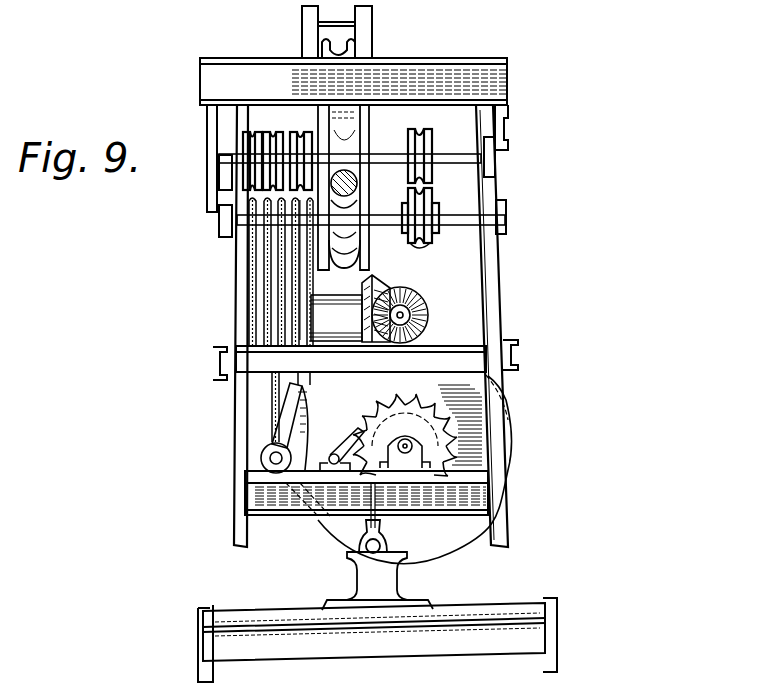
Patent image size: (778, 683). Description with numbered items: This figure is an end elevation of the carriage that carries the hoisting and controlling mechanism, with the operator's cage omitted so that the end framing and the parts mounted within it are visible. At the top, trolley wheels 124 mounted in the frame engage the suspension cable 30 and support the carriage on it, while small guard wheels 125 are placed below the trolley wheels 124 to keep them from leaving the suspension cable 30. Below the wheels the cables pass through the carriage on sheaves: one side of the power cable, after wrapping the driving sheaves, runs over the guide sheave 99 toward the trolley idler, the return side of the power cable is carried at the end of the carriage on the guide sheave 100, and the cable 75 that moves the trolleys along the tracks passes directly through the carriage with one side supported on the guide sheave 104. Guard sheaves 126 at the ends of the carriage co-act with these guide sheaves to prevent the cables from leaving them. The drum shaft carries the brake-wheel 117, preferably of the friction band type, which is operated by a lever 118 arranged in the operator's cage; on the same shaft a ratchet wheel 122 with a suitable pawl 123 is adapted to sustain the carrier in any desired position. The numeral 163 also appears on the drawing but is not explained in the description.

The trolley wheels 124 is at (366, 52).
The guard sheaves 126 is at (268, 136).
The suspension cable 30 is at (357, 182).
The cable 75 is at (237, 198).
The rope guide 163 is at (238, 250).
The guide sheave 99 is at (290, 256).
The guide sheave 104 is at (425, 246).
The guard wheels 125 is at (350, 297).
The guide sheave 100 is at (369, 315).
The brake-wheel 117 is at (456, 346).
The ratchet wheel 122 is at (394, 406).
The pawl 123 is at (362, 438).
The lever 118 is at (270, 447).